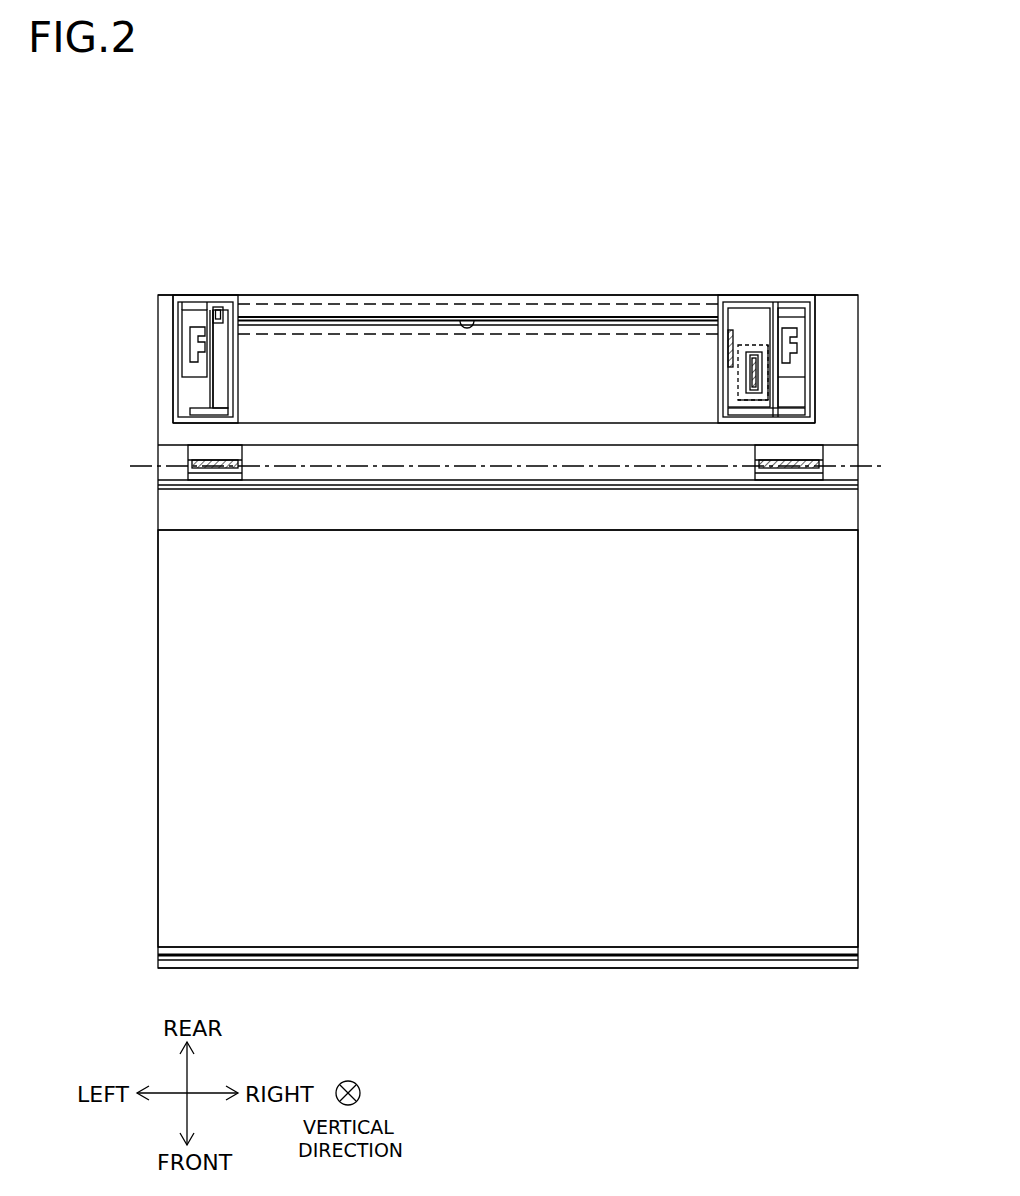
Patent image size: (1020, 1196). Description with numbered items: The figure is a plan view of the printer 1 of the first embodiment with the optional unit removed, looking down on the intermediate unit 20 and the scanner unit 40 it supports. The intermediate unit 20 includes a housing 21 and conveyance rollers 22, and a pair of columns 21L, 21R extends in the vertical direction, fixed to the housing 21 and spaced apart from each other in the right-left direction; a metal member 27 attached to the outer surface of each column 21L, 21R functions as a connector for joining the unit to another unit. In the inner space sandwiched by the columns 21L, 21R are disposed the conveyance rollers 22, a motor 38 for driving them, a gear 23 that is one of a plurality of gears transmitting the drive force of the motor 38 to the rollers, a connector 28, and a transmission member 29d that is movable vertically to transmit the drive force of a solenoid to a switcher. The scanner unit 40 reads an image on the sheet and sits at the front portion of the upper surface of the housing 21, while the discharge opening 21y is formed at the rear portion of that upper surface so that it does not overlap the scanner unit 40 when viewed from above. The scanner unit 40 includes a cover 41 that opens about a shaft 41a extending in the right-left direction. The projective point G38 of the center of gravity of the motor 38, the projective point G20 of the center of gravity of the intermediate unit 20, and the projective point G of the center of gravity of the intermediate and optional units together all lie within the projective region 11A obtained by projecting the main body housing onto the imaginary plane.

The printer 1 is at (153, 146).
The projective region 11A is at (836, 292).
The intermediate unit 20 is at (905, 420).
The housing 21 is at (852, 388).
The column 21L is at (212, 300).
The column 21R is at (772, 298).
The discharge opening 21y is at (470, 318).
The conveyance rollers 22 is at (290, 302).
The gear 23 is at (728, 305).
The metal member 27 is at (185, 342).
The connector 28 is at (747, 400).
The transmission member 29d is at (220, 300).
The motor 38 is at (757, 343).
The scanner unit 40 is at (892, 733).
The cover 41 is at (526, 760).
The shaft 41a is at (848, 466).
The projective point G is at (507, 513).
The projective point G20 is at (510, 403).
The projective point G38 is at (748, 382).